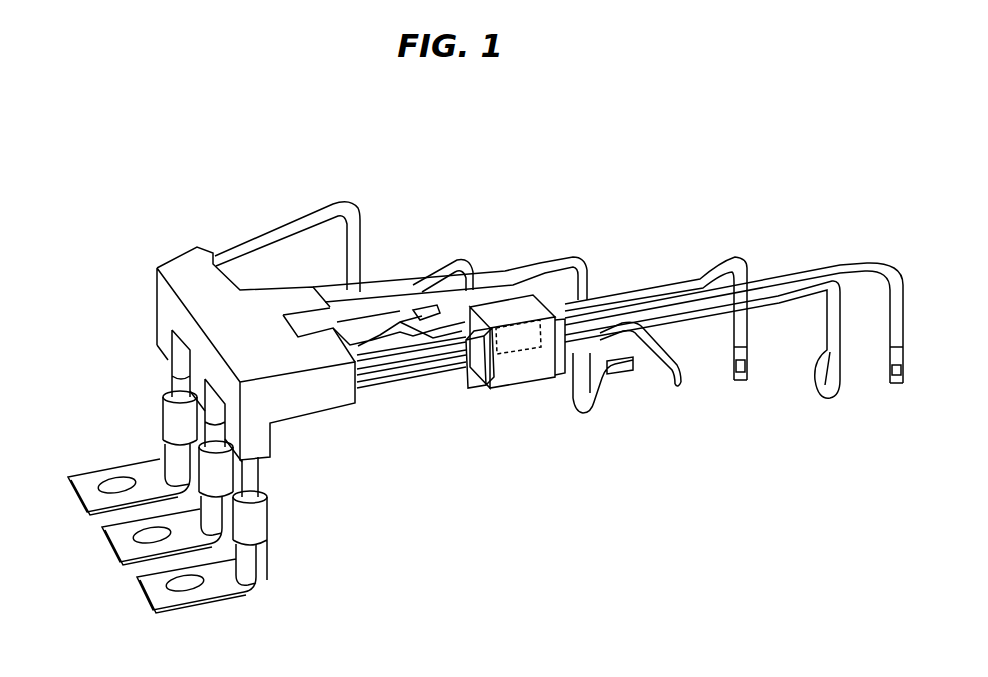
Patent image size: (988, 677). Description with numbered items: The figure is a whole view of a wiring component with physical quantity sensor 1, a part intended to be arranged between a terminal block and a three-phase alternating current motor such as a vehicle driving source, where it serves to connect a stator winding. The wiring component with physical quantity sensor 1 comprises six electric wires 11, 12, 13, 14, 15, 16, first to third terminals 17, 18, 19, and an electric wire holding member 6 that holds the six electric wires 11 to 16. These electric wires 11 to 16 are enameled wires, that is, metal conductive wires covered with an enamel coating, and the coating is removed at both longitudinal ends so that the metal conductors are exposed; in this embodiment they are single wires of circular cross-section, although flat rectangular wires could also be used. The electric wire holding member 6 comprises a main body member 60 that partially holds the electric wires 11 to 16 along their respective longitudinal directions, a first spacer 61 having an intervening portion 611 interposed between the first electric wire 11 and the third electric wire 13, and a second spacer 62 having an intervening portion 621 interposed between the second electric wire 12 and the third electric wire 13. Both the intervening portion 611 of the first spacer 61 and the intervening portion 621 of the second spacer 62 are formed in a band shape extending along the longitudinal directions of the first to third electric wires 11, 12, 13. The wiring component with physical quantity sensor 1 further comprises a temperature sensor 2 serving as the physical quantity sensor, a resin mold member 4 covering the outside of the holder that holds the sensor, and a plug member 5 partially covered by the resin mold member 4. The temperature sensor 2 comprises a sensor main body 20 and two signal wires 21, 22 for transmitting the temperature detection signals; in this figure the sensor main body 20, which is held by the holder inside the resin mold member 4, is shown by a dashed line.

The wiring component with physical quantity sensor 1 is at (845, 183).
The temperature sensor 2 is at (519, 357).
The resin mold member 4 is at (510, 310).
The plug member 5 is at (557, 350).
The electric wire holding member 6 is at (157, 240).
The first electric wire 11 is at (640, 295).
The second electric wire 12 is at (763, 312).
The third electric wire 13 is at (773, 290).
The electric wire 14 is at (530, 273).
The electric wire 15 is at (410, 282).
The electric wire 16 is at (317, 218).
The first terminal 17 is at (150, 580).
The second terminal 18 is at (110, 533).
The third terminal 19 is at (87, 487).
The sensor main body 20 is at (514, 354).
The signal wire 21 is at (677, 365).
The signal wire 22 is at (681, 383).
The main body member 60 is at (263, 303).
The first spacer 61 is at (470, 362).
The second spacer 62 is at (476, 390).
The intervening portion 611 is at (397, 355).
The intervening portion 621 is at (423, 371).